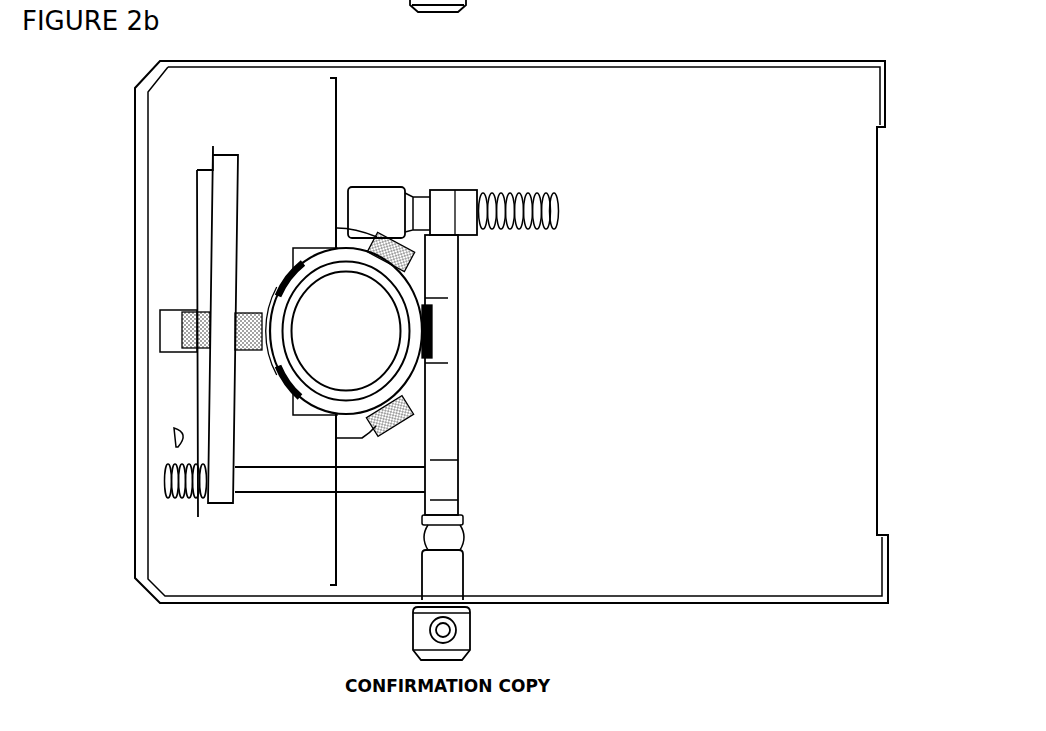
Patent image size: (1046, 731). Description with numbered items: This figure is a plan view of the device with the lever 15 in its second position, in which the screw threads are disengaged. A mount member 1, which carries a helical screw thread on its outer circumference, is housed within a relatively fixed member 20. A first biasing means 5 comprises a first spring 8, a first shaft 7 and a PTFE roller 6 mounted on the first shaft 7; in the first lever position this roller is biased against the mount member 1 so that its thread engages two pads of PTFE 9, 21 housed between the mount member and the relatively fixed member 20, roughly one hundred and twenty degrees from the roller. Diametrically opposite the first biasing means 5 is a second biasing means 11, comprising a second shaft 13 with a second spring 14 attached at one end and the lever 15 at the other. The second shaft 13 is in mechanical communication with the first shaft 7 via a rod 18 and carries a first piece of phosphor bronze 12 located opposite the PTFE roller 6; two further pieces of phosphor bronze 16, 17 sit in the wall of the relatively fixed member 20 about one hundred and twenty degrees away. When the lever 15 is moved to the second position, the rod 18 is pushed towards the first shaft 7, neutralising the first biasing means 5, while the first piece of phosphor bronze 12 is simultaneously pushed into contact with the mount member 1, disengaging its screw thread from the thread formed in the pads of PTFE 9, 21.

The mount member 1 is at (265, 303).
The first biasing means 5 is at (172, 437).
The PTFE roller 6 is at (183, 330).
The first shaft 7 is at (212, 205).
The first spring 8 is at (163, 493).
The pad of PTFE 9 is at (410, 413).
The second biasing means 11 is at (568, 213).
The first piece of phosphor bronze 12 is at (432, 323).
The second shaft 13 is at (460, 270).
The second spring 14 is at (540, 185).
The lever 15 is at (468, 632).
The further piece of phosphor bronze 16 is at (285, 258).
The further piece of phosphor bronze 17 is at (290, 398).
The rod 18 is at (283, 494).
The relatively fixed member 20 is at (135, 135).
The pad of PTFE 21 is at (397, 238).